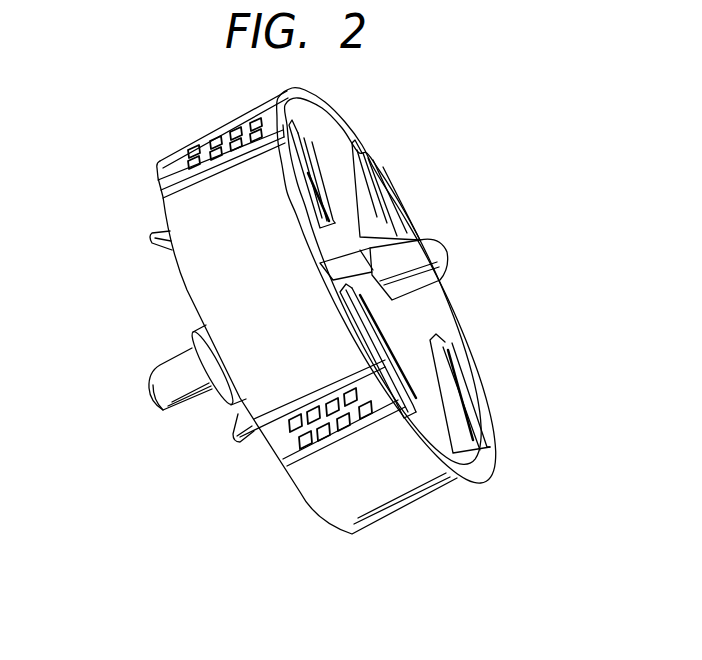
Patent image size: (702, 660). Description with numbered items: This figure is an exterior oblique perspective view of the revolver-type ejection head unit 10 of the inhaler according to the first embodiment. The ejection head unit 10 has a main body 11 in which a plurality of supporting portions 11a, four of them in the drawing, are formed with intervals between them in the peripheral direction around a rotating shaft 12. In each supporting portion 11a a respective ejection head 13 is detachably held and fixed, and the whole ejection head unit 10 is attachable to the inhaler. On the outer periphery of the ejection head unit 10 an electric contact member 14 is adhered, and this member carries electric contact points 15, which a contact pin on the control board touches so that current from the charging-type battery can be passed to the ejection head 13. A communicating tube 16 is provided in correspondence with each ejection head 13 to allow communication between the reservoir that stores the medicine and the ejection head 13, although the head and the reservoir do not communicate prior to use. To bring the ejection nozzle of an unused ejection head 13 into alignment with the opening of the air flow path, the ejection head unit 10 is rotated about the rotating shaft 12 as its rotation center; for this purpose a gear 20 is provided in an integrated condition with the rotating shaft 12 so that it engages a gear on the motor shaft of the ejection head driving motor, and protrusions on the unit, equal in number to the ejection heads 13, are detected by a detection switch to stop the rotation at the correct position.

The ejection head unit 10 is at (393, 517).
The main body 11 is at (447, 497).
The supporting portion 11a is at (322, 128).
The rotating shaft 12 is at (438, 249).
The ejection head 13 is at (313, 152).
The electric contact member 14 is at (273, 447).
The electric contact point 15 is at (303, 440).
The communicating tube 16 is at (157, 232).
The gear 20 is at (200, 343).